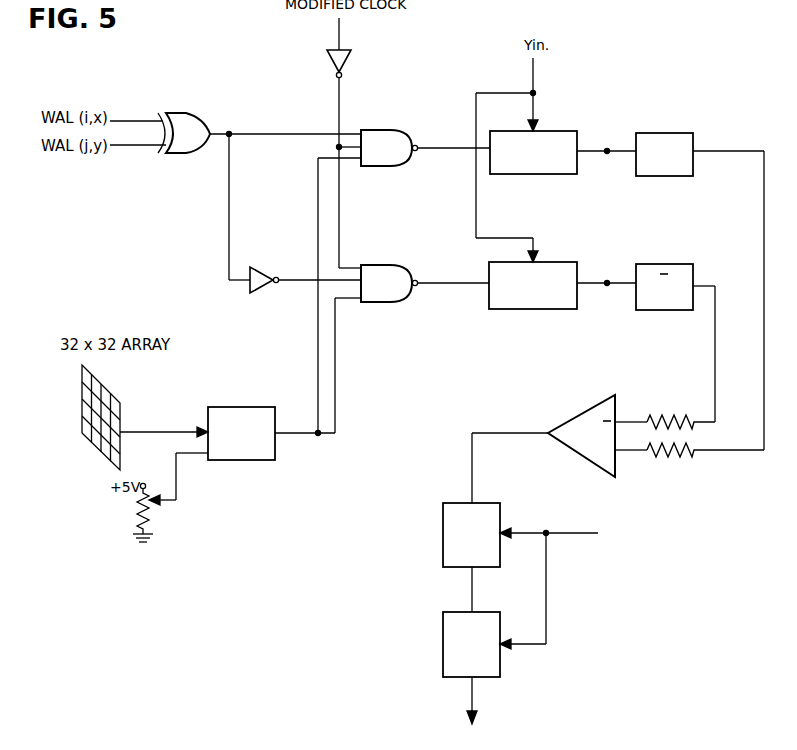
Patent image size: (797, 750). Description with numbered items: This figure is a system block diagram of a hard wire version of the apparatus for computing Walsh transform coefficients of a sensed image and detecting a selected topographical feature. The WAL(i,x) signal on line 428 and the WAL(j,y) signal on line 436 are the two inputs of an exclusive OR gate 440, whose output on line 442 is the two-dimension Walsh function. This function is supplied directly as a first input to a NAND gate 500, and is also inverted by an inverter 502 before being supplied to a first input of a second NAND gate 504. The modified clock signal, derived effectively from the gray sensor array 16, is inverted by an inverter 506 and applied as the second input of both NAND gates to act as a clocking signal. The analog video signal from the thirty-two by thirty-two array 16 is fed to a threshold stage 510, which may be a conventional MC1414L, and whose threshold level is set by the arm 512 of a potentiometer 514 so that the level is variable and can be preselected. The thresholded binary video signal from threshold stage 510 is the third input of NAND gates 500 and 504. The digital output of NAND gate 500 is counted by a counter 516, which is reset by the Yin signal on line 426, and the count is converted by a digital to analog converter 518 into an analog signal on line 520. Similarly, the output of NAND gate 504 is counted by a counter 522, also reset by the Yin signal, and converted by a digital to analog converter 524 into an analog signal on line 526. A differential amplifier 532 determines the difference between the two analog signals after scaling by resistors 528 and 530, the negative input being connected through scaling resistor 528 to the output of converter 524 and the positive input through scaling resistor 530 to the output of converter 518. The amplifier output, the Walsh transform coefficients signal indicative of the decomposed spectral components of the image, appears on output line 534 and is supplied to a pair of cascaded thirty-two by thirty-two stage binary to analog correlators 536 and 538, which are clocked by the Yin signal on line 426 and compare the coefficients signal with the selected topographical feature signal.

The 32×32 array 16 is at (124, 402).
The Yin signal line 426 is at (534, 70).
The WAL(i,x) signal line 428 is at (124, 120).
The WAL(j,y) signal line 436 is at (137, 148).
The exclusive OR gate 440 is at (198, 118).
The exclusive OR gate output line 442 is at (258, 132).
The NAND gate 500 is at (400, 130).
The inverter 502 is at (263, 268).
The NAND gate 504 is at (401, 266).
The inverter 506 is at (348, 57).
The threshold stage 510 is at (238, 393).
The arm of the potentiometer 512 is at (184, 502).
The potentiometer 514 is at (128, 515).
The counter 516 is at (572, 131).
The digital to analog converter 518 is at (690, 133).
The analog signal line 520 is at (724, 150).
The counter 522 is at (537, 310).
The digital to analog converter 524 is at (671, 310).
The analog output signal line 526 is at (706, 284).
The scaling resistor 528 is at (676, 414).
The scaling resistor 530 is at (686, 460).
The differential amplifier 532 is at (568, 422).
The output line 534 is at (502, 432).
The binary to analog correlator 536 is at (501, 516).
The binary to analog correlator 538 is at (442, 622).